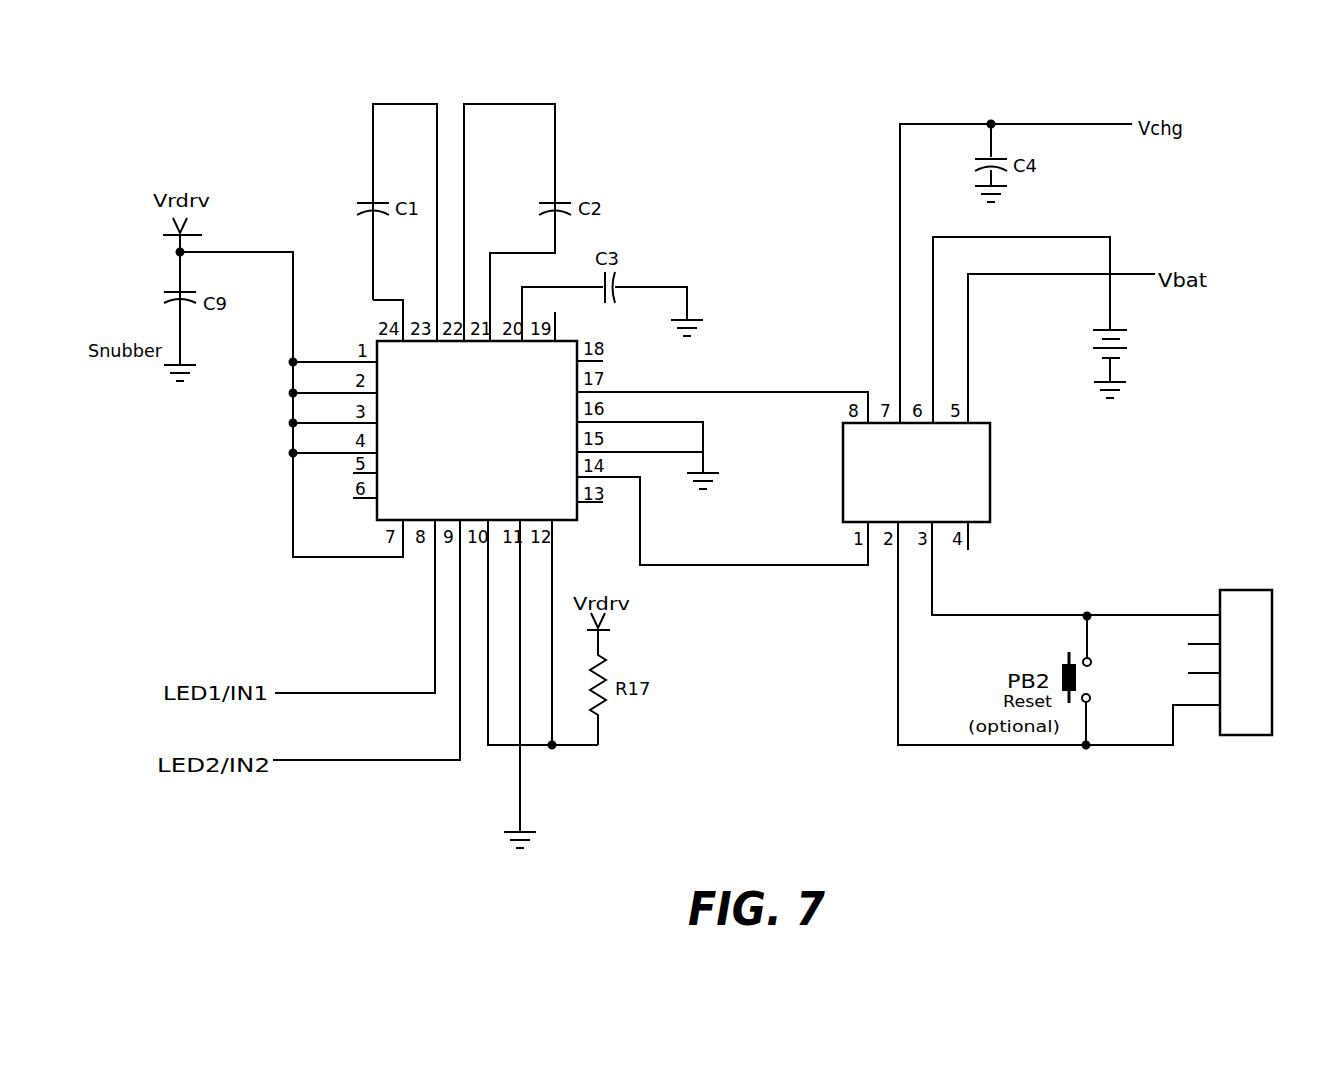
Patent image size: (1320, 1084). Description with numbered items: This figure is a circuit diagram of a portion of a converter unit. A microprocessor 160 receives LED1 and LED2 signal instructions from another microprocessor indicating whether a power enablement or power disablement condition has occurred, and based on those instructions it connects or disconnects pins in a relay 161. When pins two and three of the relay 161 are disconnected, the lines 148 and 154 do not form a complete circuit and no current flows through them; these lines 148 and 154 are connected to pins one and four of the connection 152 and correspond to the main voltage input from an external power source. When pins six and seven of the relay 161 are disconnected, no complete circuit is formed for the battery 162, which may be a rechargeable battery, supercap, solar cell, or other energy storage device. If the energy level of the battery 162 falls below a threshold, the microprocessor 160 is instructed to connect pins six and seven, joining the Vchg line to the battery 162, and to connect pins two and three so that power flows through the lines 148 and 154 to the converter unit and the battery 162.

The microprocessor 160 is at (563, 523).
The relay 161 is at (987, 527).
The battery 162 is at (1093, 345).
The line 148 is at (1180, 613).
The connection 152 is at (1248, 737).
The line 154 is at (980, 746).